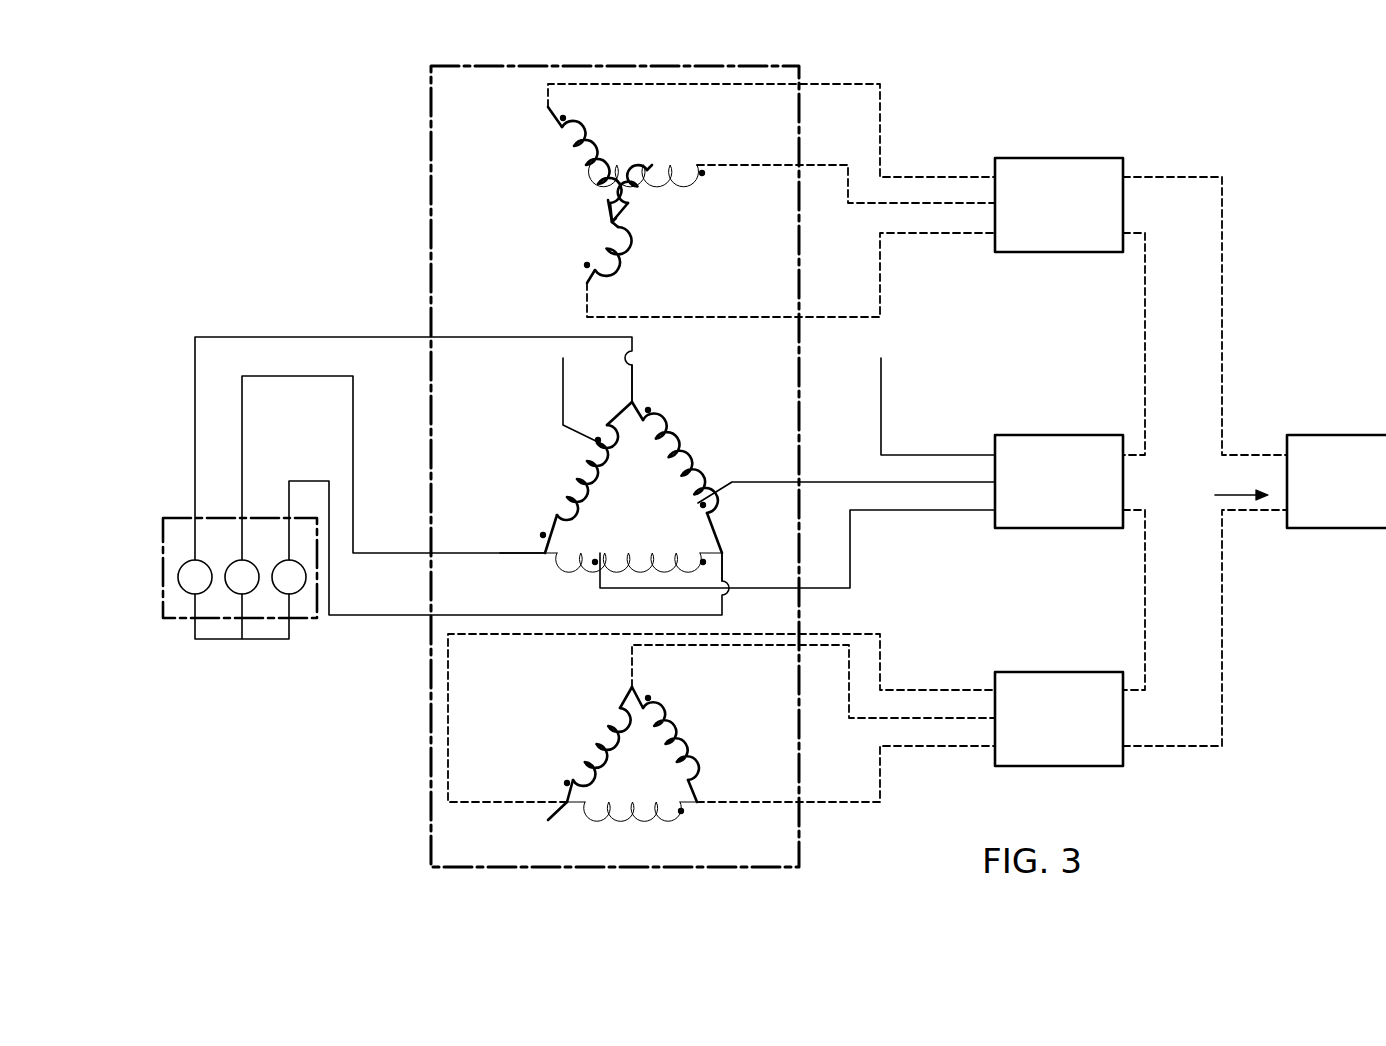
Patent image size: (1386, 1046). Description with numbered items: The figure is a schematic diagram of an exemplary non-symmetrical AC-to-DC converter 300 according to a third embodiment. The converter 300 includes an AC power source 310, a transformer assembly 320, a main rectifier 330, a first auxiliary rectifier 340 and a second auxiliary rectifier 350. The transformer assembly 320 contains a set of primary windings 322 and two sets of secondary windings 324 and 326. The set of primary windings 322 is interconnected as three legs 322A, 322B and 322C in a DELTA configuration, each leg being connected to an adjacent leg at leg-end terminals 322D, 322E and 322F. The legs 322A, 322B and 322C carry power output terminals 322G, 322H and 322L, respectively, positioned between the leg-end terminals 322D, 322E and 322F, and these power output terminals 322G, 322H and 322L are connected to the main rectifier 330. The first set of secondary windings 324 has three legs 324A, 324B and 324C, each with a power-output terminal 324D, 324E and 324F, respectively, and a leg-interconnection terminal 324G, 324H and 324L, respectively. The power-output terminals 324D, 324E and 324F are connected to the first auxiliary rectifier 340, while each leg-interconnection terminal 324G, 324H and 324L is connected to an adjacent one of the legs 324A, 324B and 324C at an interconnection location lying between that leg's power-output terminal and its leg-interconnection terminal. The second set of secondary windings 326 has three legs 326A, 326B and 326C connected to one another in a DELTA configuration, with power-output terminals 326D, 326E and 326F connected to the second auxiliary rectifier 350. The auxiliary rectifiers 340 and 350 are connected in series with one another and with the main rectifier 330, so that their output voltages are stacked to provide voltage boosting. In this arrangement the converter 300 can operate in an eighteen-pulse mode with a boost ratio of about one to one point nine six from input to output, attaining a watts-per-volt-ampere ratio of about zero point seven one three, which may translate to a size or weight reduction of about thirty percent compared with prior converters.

The non-symmetrical AC-to-DC converter 300 is at (296, 159).
The AC power source 310 is at (176, 620).
The transformer assembly 320 is at (431, 120).
The set of primary windings 322 is at (539, 439).
The leg 322A is at (667, 437).
The leg 322B is at (643, 563).
The leg 322C is at (550, 512).
The leg-end terminal 322D is at (635, 398).
The leg-end terminal 322E is at (720, 550).
The leg-end terminal 322F is at (542, 550).
The power output terminal 322G is at (708, 493).
The power output terminal 322H is at (590, 557).
The power output terminal 322L is at (598, 447).
The first set of secondary windings 324 is at (557, 195).
The leg 324A is at (563, 140).
The leg 324B is at (663, 173).
The leg 324C is at (603, 257).
The power-output terminal 324D is at (550, 115).
The power-output terminal 324E is at (712, 165).
The power-output terminal 324F is at (587, 273).
The leg-interconnection terminal 324G is at (595, 160).
The leg-interconnection terminal 324H is at (648, 173).
The leg-interconnection terminal 324L is at (609, 223).
The second set of secondary windings 326 is at (559, 718).
The leg 326A is at (662, 713).
The leg 326B is at (647, 812).
The leg 326C is at (583, 748).
The power-output terminal 326D is at (628, 687).
The power-output terminal 326E is at (700, 802).
The power-output terminal 326F is at (721, 744).
The main rectifier 330 is at (1057, 435).
The first auxiliary rectifier 340 is at (1058, 158).
The second auxiliary rectifier 350 is at (1053, 672).